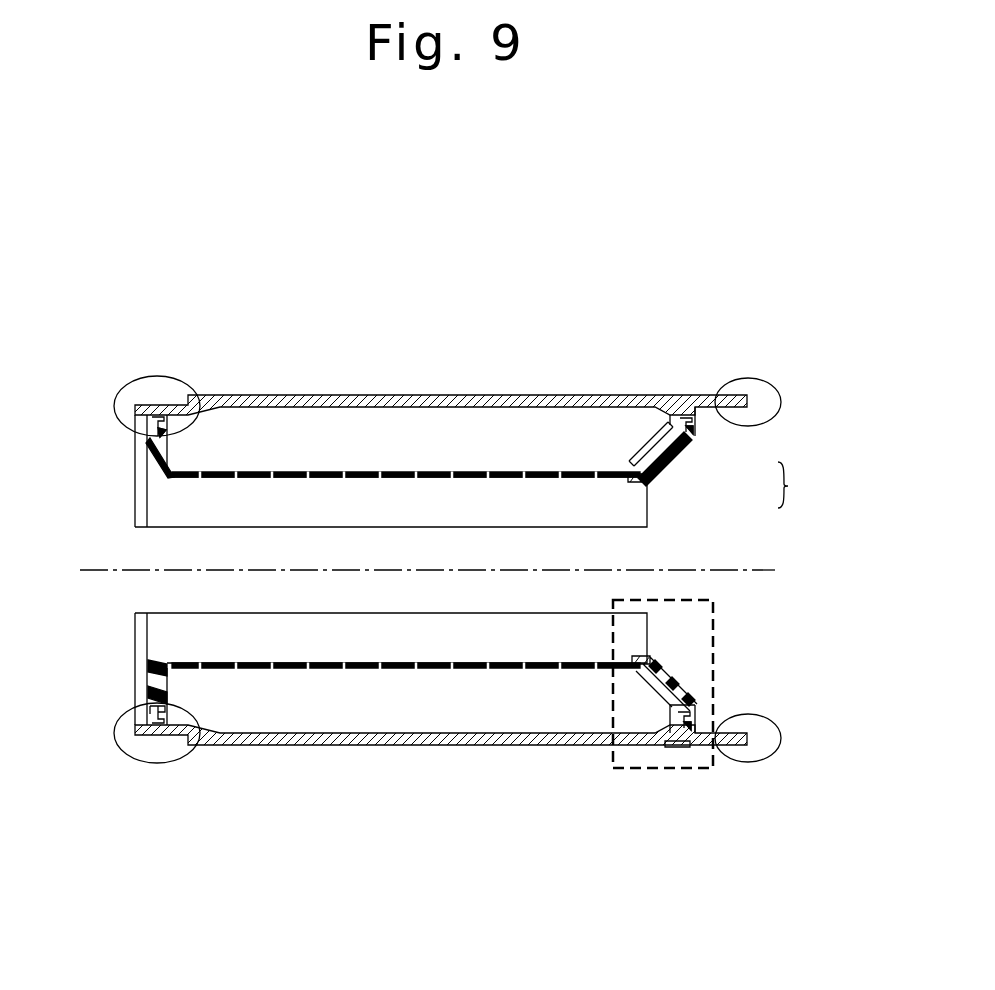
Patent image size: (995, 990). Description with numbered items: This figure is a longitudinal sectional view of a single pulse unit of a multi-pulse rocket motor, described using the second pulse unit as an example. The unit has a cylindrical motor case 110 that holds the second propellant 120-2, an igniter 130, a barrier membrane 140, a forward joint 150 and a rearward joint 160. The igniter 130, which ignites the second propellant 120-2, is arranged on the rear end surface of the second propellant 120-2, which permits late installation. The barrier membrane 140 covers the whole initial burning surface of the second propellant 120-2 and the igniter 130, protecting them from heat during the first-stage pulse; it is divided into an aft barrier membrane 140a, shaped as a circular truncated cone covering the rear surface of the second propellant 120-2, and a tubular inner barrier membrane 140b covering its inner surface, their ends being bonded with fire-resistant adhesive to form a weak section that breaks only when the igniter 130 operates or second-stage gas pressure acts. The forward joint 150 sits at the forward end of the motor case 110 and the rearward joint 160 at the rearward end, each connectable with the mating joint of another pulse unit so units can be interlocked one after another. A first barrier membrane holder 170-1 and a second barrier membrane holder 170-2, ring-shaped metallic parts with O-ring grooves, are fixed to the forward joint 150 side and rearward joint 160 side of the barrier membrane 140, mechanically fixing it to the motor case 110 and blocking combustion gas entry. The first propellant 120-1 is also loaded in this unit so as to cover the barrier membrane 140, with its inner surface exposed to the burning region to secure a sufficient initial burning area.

The cylindrical motor case 110 is at (440, 400).
The first propellant 120-1 is at (635, 507).
The second propellant 120-2 is at (310, 430).
The igniter 130 is at (652, 430).
The barrier membrane 140 is at (803, 485).
The aft barrier membrane 140a is at (683, 447).
The inner barrier membrane 140b is at (655, 486).
The forward joint 150 is at (155, 376).
The rearward joint 160 is at (747, 378).
The first barrier membrane holder 170-1 is at (150, 712).
The second barrier membrane holder 170-2 is at (697, 710).